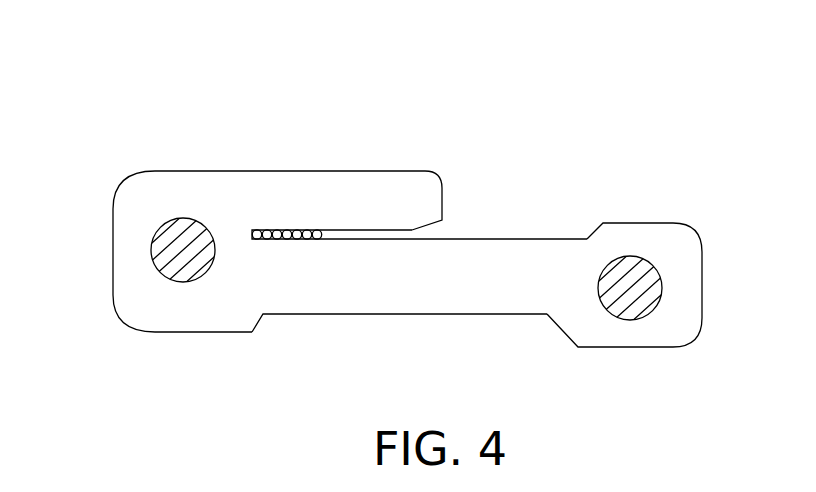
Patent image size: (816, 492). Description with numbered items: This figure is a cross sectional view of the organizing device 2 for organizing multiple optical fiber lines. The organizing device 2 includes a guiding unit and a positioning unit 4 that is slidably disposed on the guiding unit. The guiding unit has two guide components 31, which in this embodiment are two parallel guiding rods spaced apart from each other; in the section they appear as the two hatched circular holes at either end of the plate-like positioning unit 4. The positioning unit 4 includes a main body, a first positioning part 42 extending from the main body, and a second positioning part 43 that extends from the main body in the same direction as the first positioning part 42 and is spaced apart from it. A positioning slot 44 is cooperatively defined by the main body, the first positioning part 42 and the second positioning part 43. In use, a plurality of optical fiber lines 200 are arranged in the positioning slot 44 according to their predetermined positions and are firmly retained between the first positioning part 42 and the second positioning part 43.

The organizing device 2 is at (492, 128).
The positioning unit 4 is at (523, 226).
The guide components 31 is at (152, 251).
The first positioning part 42 is at (326, 326).
The second positioning part 43 is at (368, 145).
The positioning slot 44 is at (397, 240).
The optical fiber lines 200 is at (307, 230).